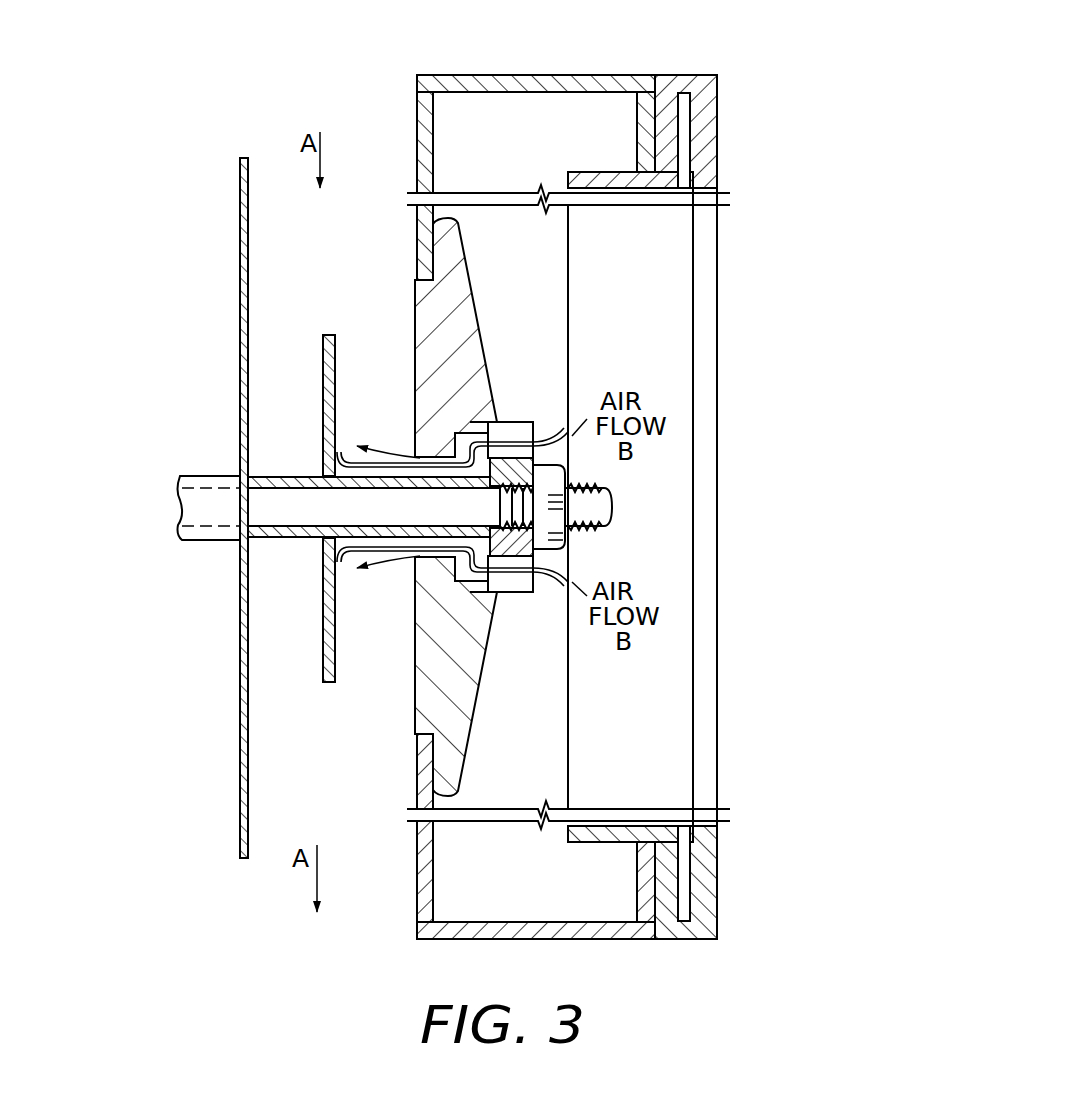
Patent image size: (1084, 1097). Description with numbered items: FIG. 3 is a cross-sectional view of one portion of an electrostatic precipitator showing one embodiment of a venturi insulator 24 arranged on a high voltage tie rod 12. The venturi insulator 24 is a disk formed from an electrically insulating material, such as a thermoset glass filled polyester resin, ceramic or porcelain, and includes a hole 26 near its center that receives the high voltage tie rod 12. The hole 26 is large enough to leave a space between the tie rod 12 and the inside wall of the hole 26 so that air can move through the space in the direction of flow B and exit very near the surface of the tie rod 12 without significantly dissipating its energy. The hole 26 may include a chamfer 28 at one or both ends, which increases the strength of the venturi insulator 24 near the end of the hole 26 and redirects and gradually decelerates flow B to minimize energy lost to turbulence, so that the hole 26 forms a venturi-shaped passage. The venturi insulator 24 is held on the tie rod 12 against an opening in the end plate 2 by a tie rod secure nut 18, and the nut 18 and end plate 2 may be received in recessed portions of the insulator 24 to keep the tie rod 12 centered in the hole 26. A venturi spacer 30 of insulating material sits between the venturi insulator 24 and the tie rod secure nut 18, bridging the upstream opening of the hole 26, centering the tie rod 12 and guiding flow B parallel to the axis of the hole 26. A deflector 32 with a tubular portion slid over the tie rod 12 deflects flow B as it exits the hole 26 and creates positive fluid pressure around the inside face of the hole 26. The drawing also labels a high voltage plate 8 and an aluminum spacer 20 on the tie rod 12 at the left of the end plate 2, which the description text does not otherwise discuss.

The end plate 2 is at (752, 156).
The high voltage plate 8 is at (240, 206).
The high voltage tie rod 12 is at (297, 506).
The tie rod secure nut 18 is at (552, 473).
The aluminum spacer 20 is at (204, 472).
The venturi insulator 24 is at (485, 684).
The hole 26 is at (481, 418).
The chamfer 28 is at (341, 454).
The venturi spacer 30 is at (522, 418).
The deflector 32 is at (327, 686).